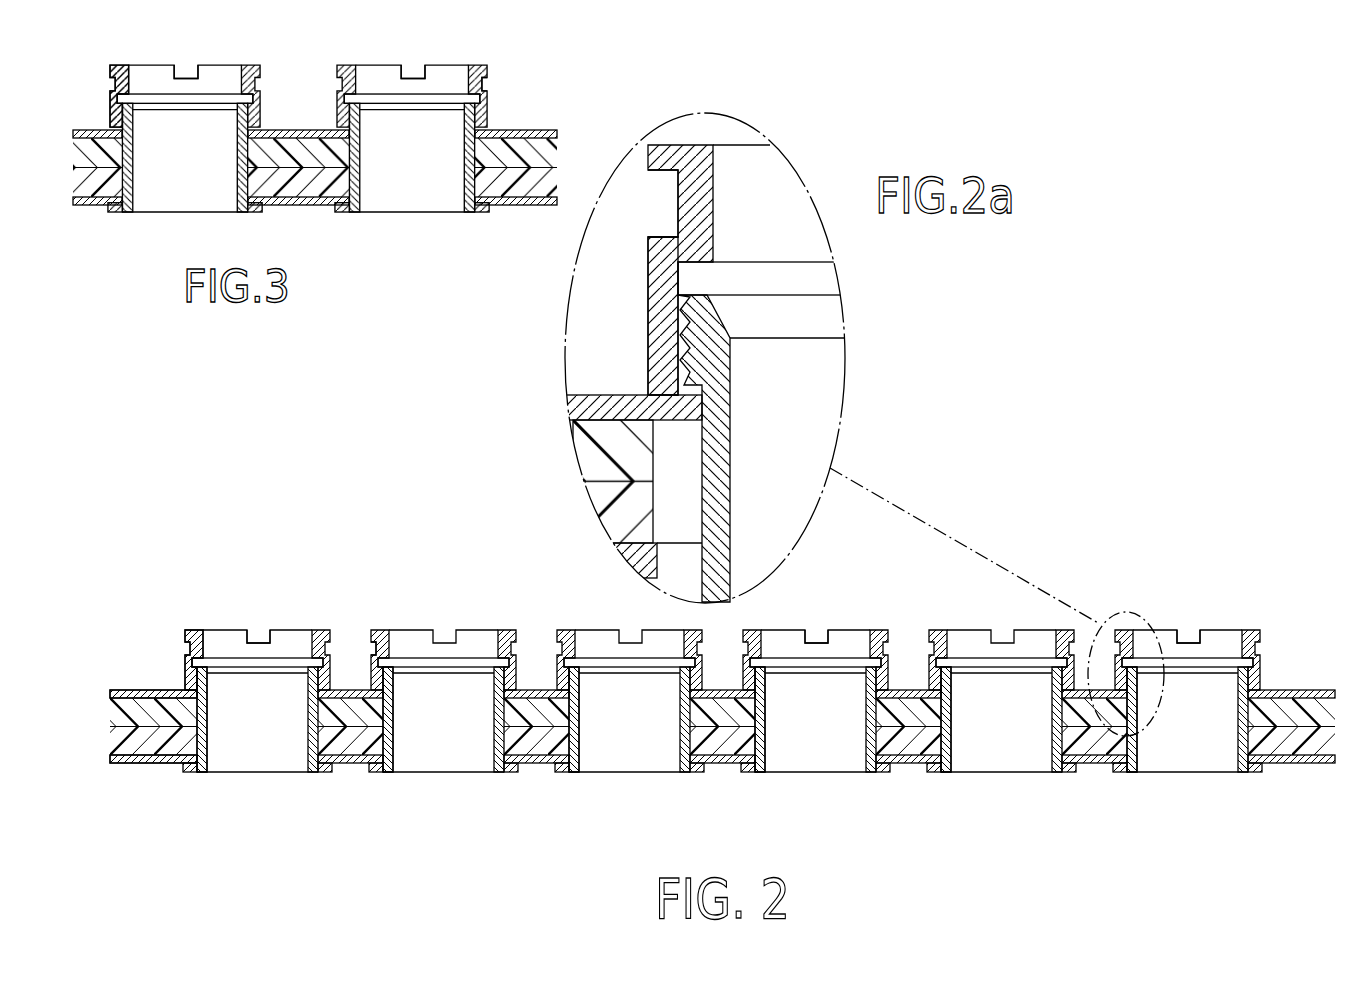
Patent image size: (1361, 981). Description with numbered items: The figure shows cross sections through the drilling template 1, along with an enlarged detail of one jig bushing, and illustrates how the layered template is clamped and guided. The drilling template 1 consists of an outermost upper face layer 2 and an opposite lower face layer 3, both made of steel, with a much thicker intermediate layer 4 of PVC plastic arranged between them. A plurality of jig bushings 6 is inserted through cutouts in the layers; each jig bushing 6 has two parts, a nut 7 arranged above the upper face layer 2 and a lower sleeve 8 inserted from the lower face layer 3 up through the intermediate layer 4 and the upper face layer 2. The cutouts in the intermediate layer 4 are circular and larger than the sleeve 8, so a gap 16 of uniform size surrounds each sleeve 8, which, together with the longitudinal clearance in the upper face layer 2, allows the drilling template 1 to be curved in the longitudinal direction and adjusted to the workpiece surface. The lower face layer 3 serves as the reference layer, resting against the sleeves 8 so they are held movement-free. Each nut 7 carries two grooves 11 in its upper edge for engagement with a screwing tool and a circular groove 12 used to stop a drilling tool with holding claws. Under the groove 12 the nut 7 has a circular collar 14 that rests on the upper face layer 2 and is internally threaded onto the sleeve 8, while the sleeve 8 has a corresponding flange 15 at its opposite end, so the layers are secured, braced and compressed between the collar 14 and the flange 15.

In FIG. 2, the drilling template 1 is at (441, 568).
In FIG. 3, the upper face layer 2 is at (94, 130).
In FIG. 2A, the upper face layer 2 is at (606, 396).
In FIG. 2, the upper face layer 2 is at (148, 690).
In FIG. 3, the lower face layer 3 is at (101, 207).
In FIG. 2, the lower face layer 3 is at (148, 766).
In FIG. 3, the intermediate layer 4 is at (331, 185).
In FIG. 2A, the intermediate layer 4 is at (642, 568).
In FIG. 2, the intermediate layer 4 is at (114, 742).
In FIG. 3, the jig bushing 6 is at (178, 225).
In FIG. 2, the jig bushing 6 is at (256, 788).
In FIG. 3, the nut 7 is at (222, 72).
In FIG. 2A, the nut 7 is at (770, 182).
In FIG. 2, the nut 7 is at (296, 634).
In FIG. 2A, the sleeve 8 is at (746, 456).
In FIG. 2, the sleeve 8 is at (215, 707).
In FIG. 3, the groove 11 is at (259, 66).
In FIG. 2, the groove 11 is at (259, 626).
In FIG. 3, the circular groove 12 is at (492, 80).
In FIG. 2A, the circular groove 12 is at (652, 200).
In FIG. 2, the circular groove 12 is at (362, 644).
In FIG. 3, the circular collar 14 is at (124, 104).
In FIG. 2A, the circular collar 14 is at (656, 320).
In FIG. 2, the circular collar 14 is at (178, 660).
In FIG. 3, the flange 15 is at (471, 213).
In FIG. 2, the flange 15 is at (313, 775).
In FIG. 3, the gap 16 is at (478, 150).
In FIG. 2A, the gap 16 is at (662, 480).
In FIG. 2, the gap 16 is at (718, 690).